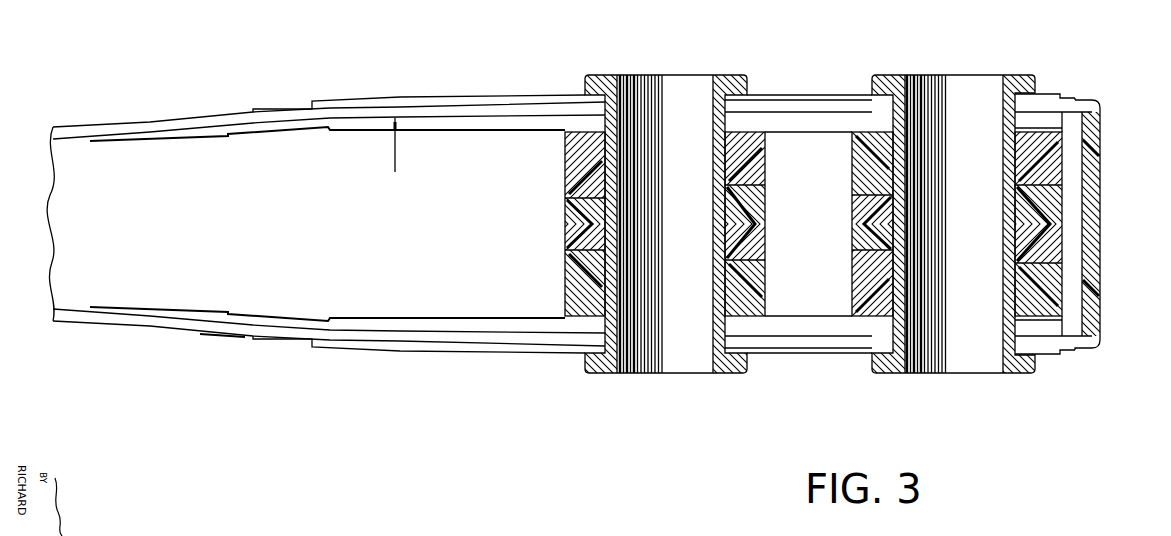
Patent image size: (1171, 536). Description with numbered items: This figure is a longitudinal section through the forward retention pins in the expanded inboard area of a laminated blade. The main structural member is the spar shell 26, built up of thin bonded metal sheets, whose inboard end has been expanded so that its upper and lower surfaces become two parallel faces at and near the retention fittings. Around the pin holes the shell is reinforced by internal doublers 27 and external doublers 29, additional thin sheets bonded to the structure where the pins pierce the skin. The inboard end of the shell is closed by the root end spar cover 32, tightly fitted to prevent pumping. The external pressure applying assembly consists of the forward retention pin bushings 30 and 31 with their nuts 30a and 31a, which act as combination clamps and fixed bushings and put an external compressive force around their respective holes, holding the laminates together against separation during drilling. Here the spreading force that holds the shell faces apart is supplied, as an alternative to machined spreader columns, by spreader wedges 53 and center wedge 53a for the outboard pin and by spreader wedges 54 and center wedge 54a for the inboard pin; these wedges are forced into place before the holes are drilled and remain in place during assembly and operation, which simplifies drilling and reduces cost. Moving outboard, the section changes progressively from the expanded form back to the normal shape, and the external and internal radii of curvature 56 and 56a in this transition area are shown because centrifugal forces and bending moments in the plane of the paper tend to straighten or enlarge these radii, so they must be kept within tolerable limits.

The spar shell 26 is at (112, 135).
The internal doublers 27 is at (460, 123).
The external doublers 29 is at (318, 100).
The forward retention pin bushing 30 is at (720, 77).
The nut 30a is at (588, 372).
The forward retention pin bushing 31 is at (887, 75).
The nut 31a is at (872, 372).
The root end spar cover 32 is at (1097, 100).
The spreader wedges 53 is at (565, 177).
The center wedge 53a is at (563, 221).
The spreader wedges 54 is at (852, 175).
The center wedge 54a is at (852, 220).
The external radius of curvature 56 is at (222, 342).
The internal radius of curvature 56a is at (393, 158).